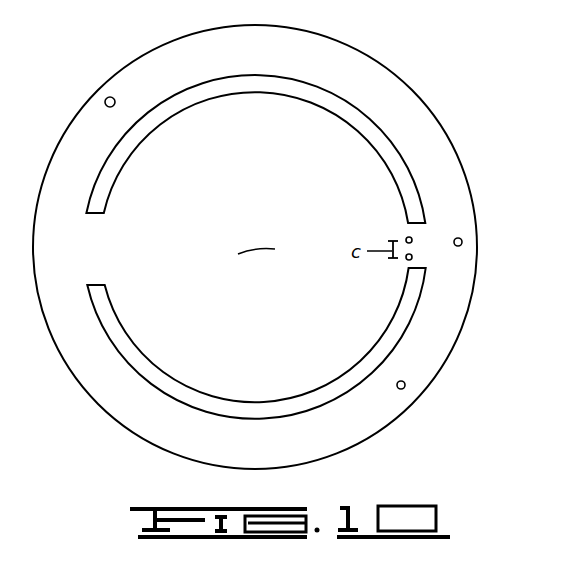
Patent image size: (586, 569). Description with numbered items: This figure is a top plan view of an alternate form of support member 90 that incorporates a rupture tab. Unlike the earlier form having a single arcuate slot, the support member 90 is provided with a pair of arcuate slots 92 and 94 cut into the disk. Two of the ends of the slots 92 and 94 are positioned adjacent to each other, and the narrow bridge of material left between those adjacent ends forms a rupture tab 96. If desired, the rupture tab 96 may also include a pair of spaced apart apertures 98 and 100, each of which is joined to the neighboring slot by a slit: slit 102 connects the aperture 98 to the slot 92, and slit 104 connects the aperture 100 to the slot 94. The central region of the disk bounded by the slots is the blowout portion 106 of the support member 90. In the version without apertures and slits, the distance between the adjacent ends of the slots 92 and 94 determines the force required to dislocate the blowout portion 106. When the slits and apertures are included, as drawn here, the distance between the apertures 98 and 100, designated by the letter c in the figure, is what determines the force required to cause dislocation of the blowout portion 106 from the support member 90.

The support member 90 is at (422, 90).
The arcuate slot 92 is at (173, 103).
The arcuate slot 94 is at (405, 322).
The rupture tab 96 is at (420, 243).
The aperture 98 is at (409, 236).
The aperture 100 is at (408, 261).
The slit 102 is at (409, 228).
The slit 104 is at (412, 263).
The blowout portion 106 is at (258, 239).